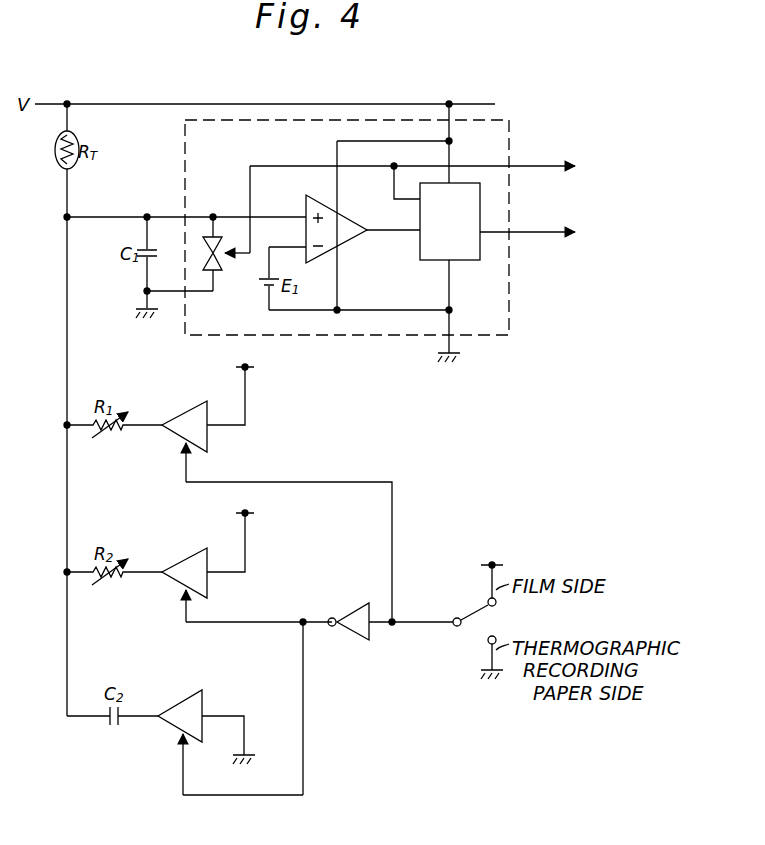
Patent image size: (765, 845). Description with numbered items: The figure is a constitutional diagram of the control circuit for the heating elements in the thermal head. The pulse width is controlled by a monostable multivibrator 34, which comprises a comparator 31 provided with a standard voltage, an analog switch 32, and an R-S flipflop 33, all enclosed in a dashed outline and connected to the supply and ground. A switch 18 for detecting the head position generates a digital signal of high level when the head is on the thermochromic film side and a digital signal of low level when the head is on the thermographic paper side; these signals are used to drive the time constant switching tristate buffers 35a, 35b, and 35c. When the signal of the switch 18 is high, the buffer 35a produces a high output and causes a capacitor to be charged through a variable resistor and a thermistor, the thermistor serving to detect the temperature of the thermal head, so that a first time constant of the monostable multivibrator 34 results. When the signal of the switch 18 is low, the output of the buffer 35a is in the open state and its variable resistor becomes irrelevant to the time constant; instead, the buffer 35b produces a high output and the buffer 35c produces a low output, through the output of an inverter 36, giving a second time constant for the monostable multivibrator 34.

The switch 18 is at (471, 612).
The comparator 31 is at (348, 209).
The analog switch 32 is at (224, 268).
The R-S flipflop 33 is at (463, 261).
The monostable multivibrator 34 is at (196, 158).
The tristate buffer 35a is at (190, 405).
The tristate buffer 35b is at (190, 552).
The tristate buffer 35c is at (185, 697).
The inverter 36 is at (353, 604).